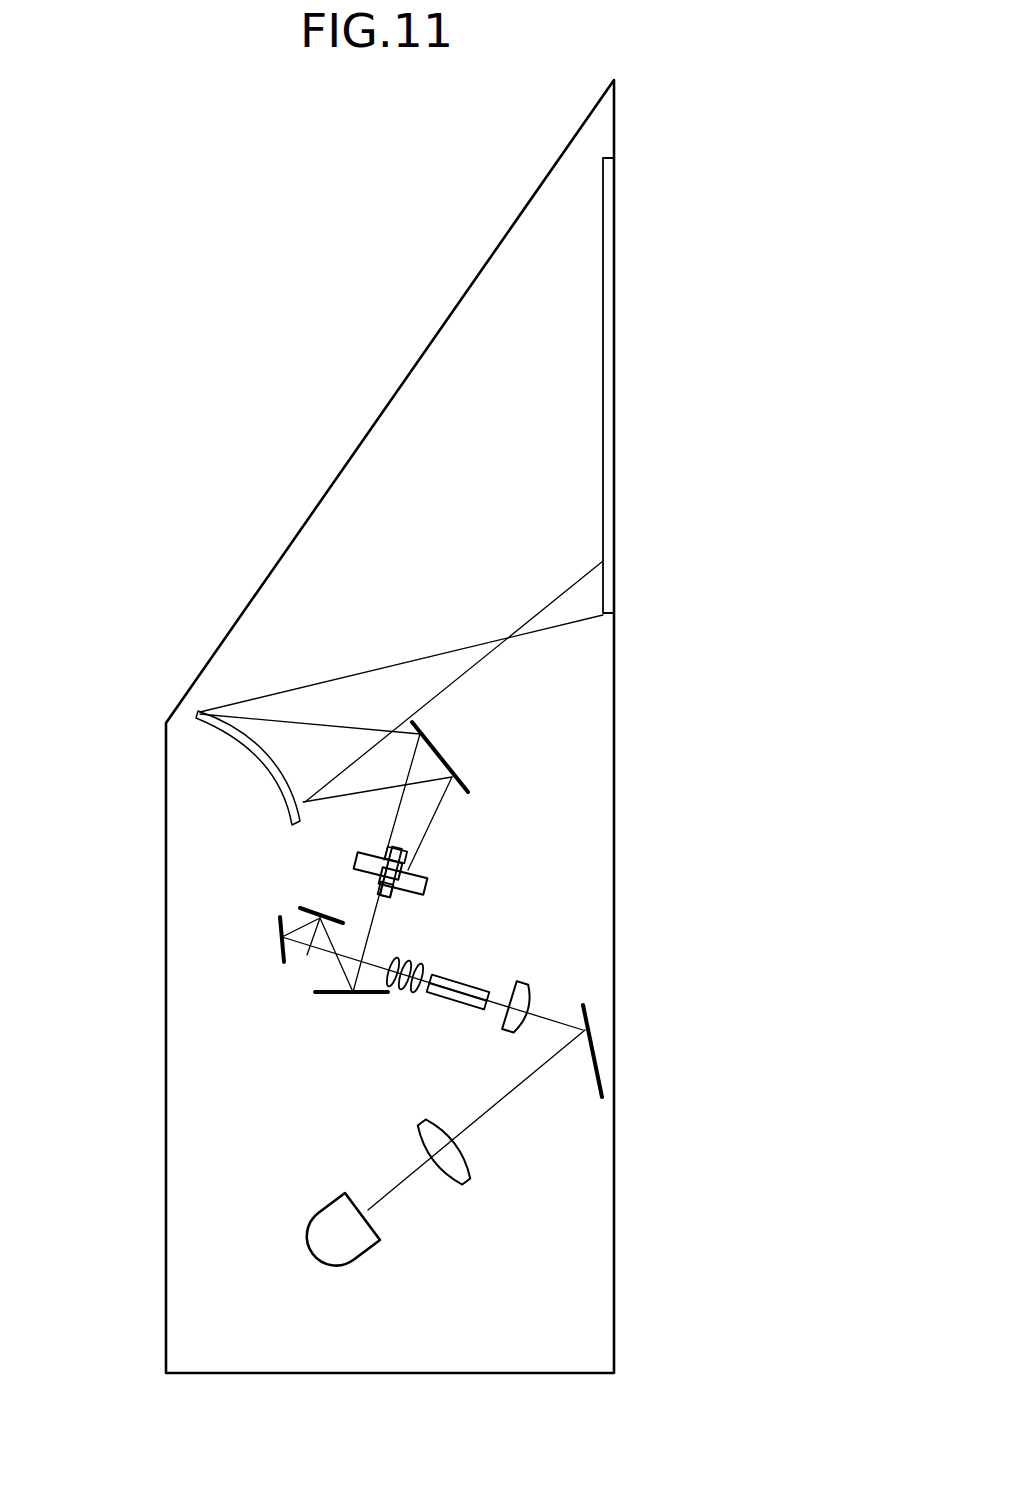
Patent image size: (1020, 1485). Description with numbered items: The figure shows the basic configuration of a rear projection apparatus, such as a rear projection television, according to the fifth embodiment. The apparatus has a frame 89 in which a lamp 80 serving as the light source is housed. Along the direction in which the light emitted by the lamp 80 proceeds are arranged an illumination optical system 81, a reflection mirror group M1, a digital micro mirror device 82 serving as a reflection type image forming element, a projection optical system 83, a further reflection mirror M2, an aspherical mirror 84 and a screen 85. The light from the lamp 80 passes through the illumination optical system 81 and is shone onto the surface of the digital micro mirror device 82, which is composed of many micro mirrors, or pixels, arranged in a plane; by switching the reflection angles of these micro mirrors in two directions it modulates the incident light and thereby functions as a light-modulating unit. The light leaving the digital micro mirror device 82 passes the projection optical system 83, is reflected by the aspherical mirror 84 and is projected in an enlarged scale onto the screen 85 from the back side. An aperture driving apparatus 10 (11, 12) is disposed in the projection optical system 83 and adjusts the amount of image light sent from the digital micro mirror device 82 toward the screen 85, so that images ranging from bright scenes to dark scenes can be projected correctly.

The frame 89 is at (283, 552).
The screen 85 is at (615, 447).
The aspherical mirror 84 is at (230, 757).
The mirror M2 is at (465, 745).
The projection optical system 83 is at (452, 855).
The aperture driving apparatus 10 is at (357, 857).
The aperture driving apparatus component 11 is at (219, 881).
The aperture driving apparatus component 12 is at (386, 890).
The digital micro mirror device 82 is at (342, 1007).
The reflection mirror group M1 is at (265, 952).
The illumination optical system 81 is at (638, 982).
The lamp 80 is at (370, 1250).